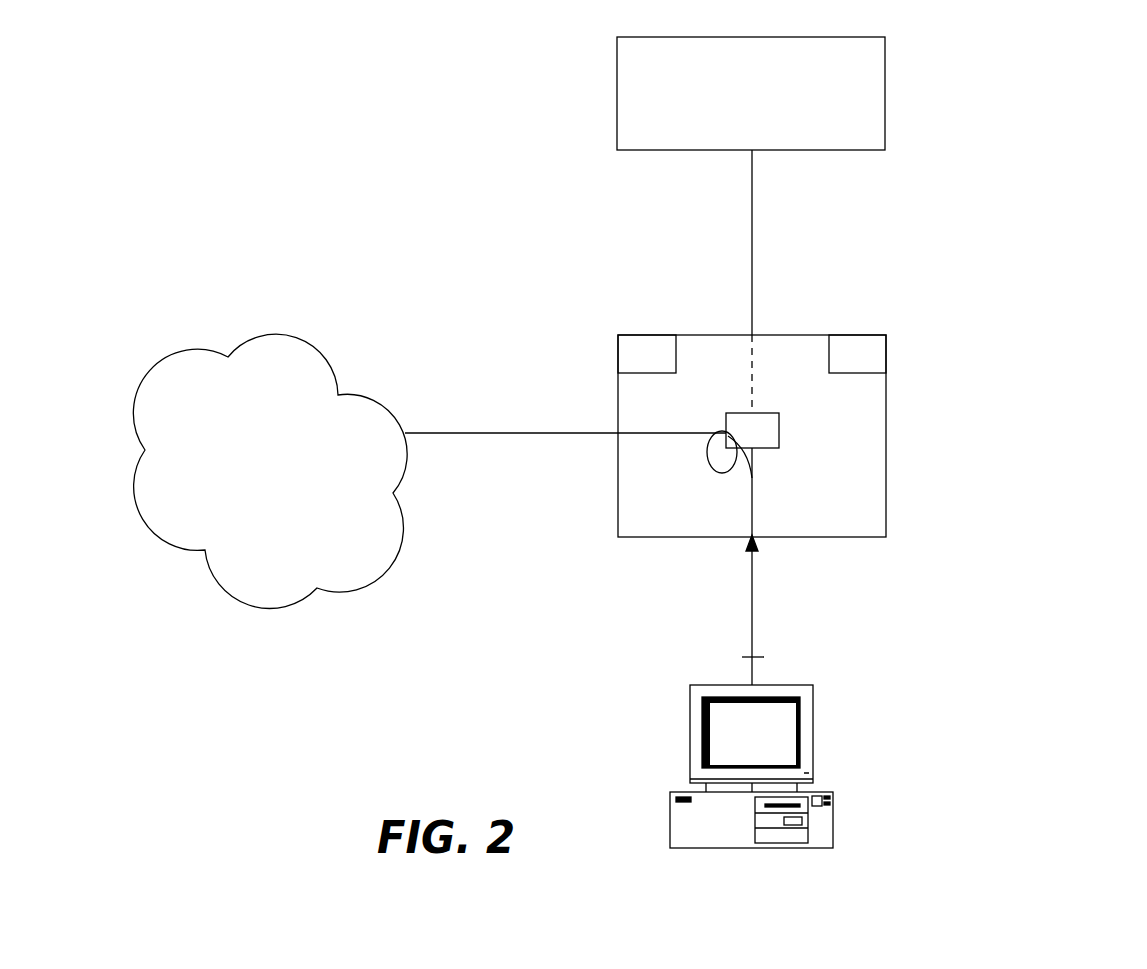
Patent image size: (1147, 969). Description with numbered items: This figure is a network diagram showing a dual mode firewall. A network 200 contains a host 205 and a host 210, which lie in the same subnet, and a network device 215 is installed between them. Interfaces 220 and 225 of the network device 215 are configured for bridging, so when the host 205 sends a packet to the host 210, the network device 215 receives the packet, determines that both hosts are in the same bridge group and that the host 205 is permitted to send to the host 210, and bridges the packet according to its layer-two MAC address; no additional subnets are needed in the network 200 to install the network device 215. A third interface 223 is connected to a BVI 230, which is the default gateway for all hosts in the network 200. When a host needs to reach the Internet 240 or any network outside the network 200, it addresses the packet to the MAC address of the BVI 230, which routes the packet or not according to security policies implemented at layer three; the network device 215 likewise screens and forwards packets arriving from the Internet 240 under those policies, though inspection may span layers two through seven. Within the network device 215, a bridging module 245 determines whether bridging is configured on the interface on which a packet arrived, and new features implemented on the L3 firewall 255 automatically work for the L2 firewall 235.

The network 200 is at (1022, 200).
The host 205 is at (803, 745).
The host 210 is at (883, 72).
The network device 215 is at (860, 462).
The interface 220 is at (755, 545).
The interface 223 is at (618, 435).
The interface 225 is at (752, 335).
The BVI 230 is at (710, 465).
The L2 firewall 235 is at (886, 338).
The Internet 240 is at (252, 585).
The bridging module 245 is at (738, 418).
The L3 firewall 255 is at (617, 337).